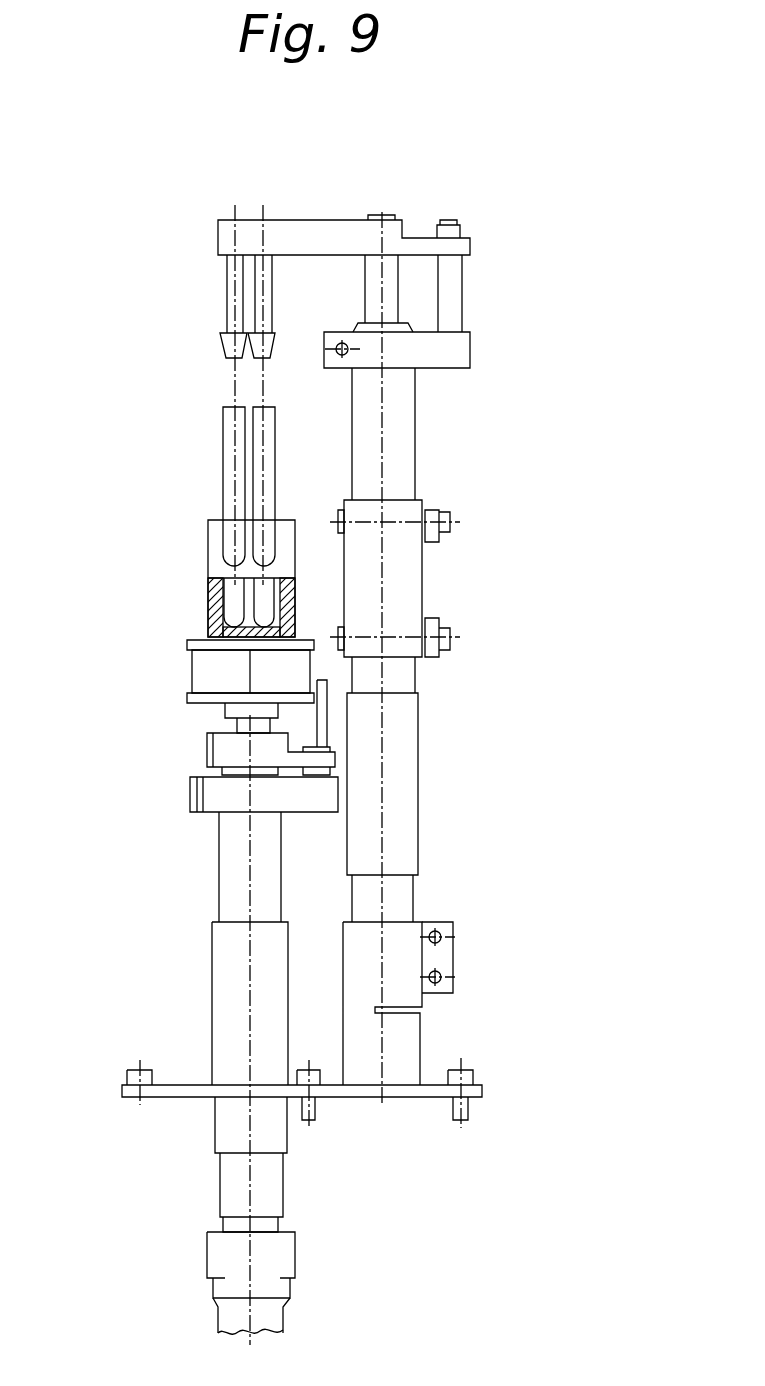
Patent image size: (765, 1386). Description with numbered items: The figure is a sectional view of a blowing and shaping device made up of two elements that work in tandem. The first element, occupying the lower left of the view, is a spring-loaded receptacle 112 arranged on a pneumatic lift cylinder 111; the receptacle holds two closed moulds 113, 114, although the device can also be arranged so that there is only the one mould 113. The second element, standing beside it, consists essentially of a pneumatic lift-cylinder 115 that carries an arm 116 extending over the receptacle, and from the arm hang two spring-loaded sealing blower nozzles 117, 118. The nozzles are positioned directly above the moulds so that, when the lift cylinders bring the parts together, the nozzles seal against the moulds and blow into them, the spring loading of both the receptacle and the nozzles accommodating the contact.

The pneumatic lift cylinder 111 is at (275, 1255).
The spring-loaded receptacle 112 is at (235, 673).
The closed mould 113 is at (235, 590).
The closed mould 114 is at (262, 606).
The pneumatic lift-cylinder 115 is at (395, 790).
The arm 116 is at (313, 228).
The spring-loaded sealing blower nozzle 117 is at (222, 345).
The spring-loaded sealing blower nozzle 118 is at (270, 360).